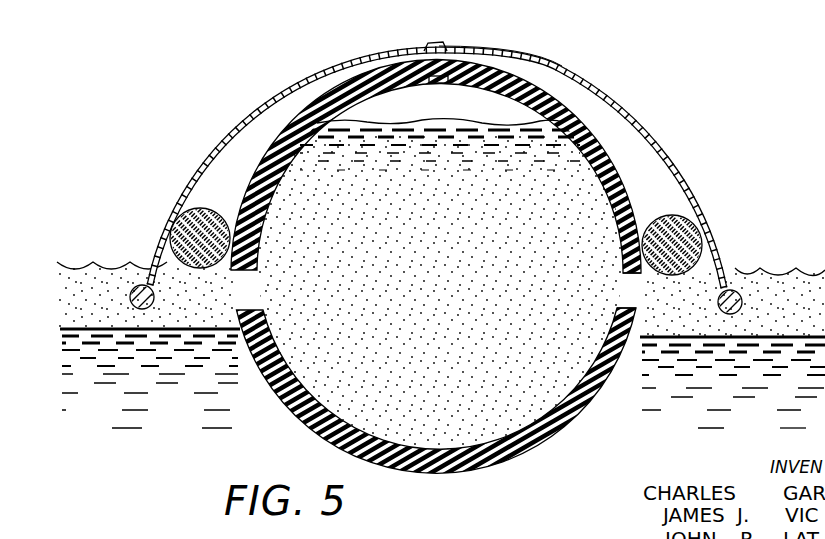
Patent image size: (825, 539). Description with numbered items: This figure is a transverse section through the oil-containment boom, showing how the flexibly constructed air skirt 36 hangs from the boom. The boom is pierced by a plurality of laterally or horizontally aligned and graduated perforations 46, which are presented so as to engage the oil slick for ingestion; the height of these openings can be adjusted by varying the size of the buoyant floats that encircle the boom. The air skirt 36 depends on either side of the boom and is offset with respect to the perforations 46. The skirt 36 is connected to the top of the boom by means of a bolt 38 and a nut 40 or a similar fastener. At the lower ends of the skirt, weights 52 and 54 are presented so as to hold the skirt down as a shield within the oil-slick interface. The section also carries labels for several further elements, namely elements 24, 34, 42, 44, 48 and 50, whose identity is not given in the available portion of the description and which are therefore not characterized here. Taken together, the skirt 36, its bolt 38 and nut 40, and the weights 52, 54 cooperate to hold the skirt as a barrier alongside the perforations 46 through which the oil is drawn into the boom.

The spherical vessel wall 24 is at (600, 144).
The sea bottom 34 is at (126, 424).
The air skirt 36 is at (603, 97).
The bolt 38 is at (444, 44).
The nut 40 is at (428, 82).
The liquid contents 42 is at (472, 114).
The outer strap layer 44 is at (540, 63).
The perforations 46 is at (630, 293).
The right float 48 is at (683, 219).
The left float 50 is at (178, 221).
The weight 52 is at (737, 290).
The weight 54 is at (126, 282).